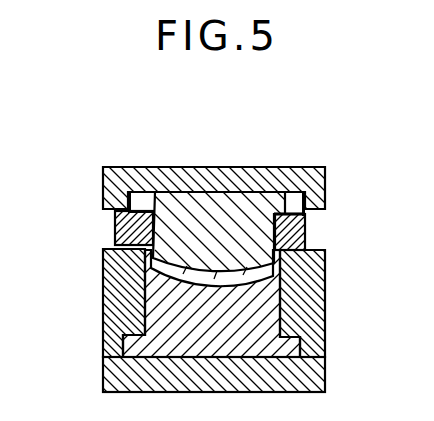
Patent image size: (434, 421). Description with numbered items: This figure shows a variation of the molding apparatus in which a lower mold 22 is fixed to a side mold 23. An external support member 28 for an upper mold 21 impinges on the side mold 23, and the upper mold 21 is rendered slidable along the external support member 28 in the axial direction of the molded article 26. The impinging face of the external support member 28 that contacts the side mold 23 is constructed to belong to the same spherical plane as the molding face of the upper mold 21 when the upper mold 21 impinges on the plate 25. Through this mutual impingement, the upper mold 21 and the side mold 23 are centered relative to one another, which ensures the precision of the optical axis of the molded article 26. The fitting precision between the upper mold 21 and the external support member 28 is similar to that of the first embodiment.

The plate 25 is at (243, 180).
The external support member 28 is at (117, 240).
The upper mold 21 is at (268, 228).
The molded article 26 is at (143, 293).
The side mold 23 is at (326, 273).
The lower mold 22 is at (288, 320).